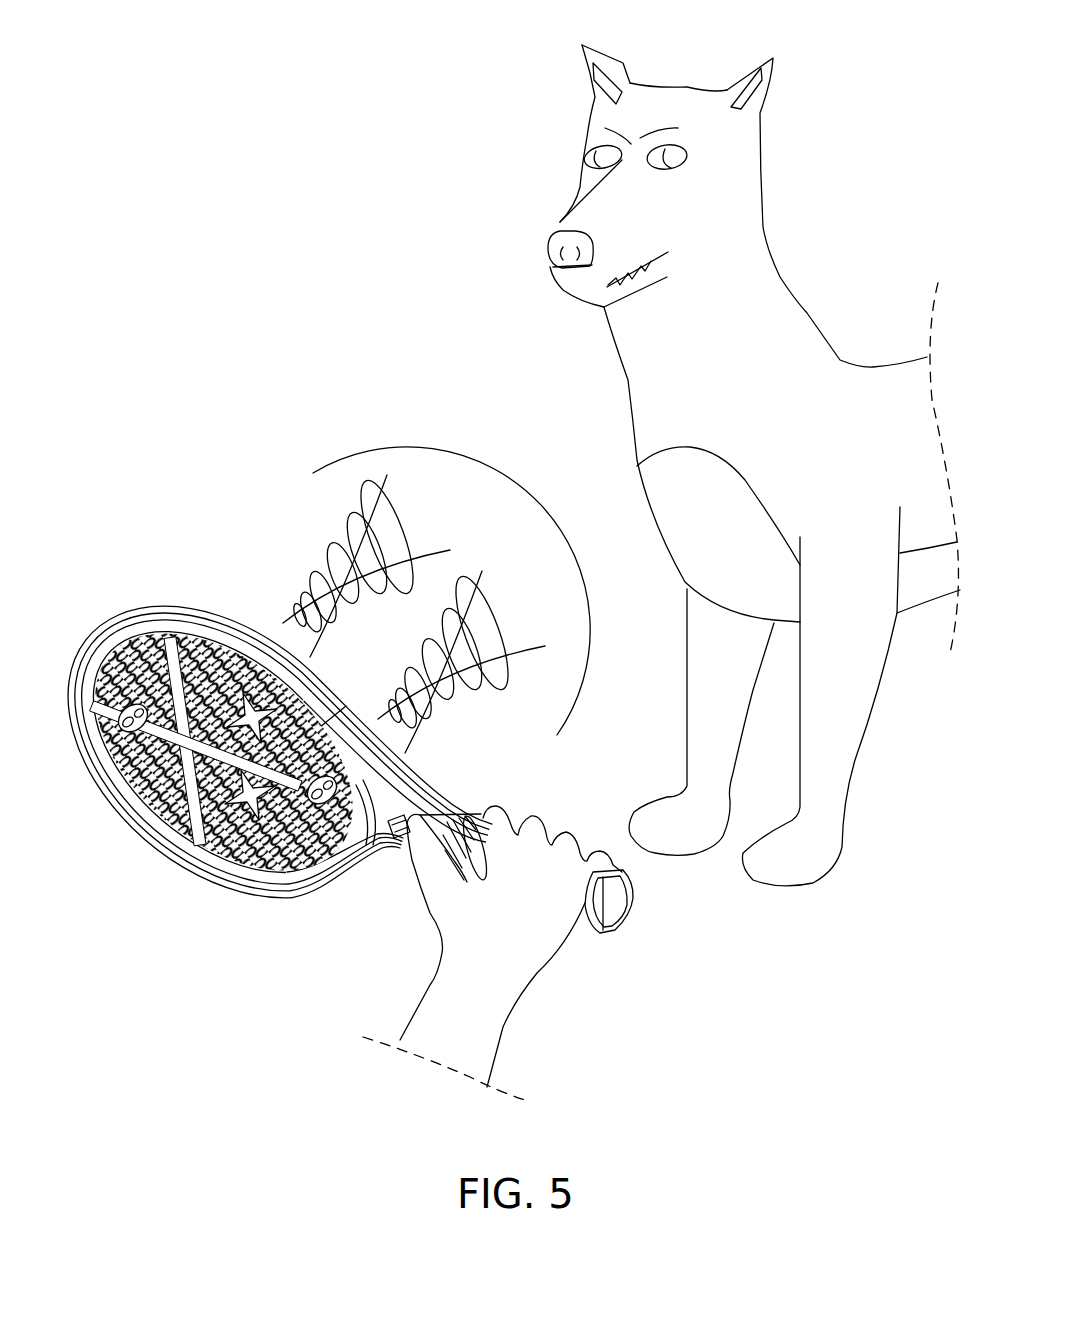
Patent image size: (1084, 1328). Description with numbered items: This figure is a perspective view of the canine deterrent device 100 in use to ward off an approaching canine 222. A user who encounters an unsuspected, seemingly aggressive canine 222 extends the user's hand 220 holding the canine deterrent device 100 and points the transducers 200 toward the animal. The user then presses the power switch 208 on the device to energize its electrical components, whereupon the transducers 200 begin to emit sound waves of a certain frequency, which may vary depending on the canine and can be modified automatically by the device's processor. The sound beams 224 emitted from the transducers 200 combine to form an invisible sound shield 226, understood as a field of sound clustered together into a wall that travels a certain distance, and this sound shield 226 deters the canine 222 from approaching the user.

The canine deterrent device 100 is at (267, 814).
The sound transducer 200 is at (100, 712).
The electronic switch 208 is at (395, 838).
The user's hand 220 is at (553, 972).
The canine 222 is at (800, 183).
The sound beams 224 is at (253, 547).
The sound shield 226 is at (444, 442).